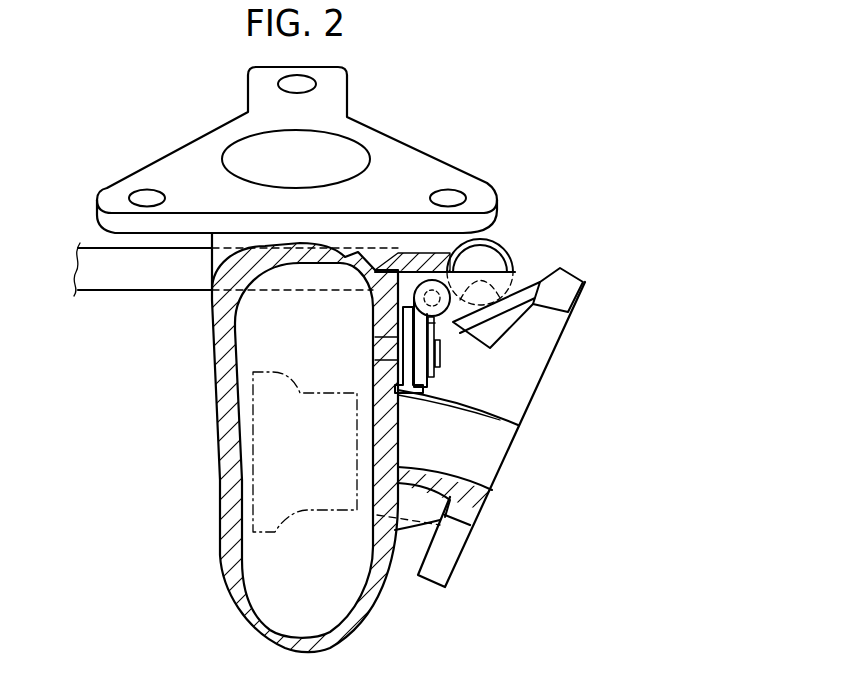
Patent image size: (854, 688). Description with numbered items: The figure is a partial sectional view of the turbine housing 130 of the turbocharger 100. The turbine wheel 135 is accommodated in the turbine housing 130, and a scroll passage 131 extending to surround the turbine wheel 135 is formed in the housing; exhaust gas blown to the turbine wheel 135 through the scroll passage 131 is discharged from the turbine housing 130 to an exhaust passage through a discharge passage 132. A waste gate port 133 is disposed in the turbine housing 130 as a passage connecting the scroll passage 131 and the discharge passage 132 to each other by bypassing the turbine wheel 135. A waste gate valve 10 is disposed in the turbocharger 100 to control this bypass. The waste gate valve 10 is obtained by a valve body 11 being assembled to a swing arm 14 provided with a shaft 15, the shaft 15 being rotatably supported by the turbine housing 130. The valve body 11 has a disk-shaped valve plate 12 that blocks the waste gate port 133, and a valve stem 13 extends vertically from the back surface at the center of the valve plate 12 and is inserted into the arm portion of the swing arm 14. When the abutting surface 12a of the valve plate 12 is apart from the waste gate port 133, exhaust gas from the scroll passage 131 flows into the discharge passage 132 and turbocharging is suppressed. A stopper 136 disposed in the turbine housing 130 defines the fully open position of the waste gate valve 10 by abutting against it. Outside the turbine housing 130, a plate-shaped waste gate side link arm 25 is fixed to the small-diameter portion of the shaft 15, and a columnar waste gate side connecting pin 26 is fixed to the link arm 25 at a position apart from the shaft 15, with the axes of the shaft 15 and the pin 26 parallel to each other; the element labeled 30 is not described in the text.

The turbocharger 100 is at (571, 182).
The waste gate valve 10 is at (549, 423).
The valve body 11 is at (476, 370).
The valve plate 12 is at (420, 395).
The abutting surface 12a is at (403, 378).
The valve stem 13 is at (428, 362).
The swing arm 14 is at (445, 323).
The shaft 15 is at (403, 317).
The waste gate side link arm 25 is at (495, 250).
The waste gate side connecting pin 26 is at (505, 258).
The pipe 30 is at (133, 291).
The turbine housing 130 is at (223, 587).
The scroll passage 131 is at (358, 160).
The discharge passage 132 is at (483, 478).
The waste gate port 133 is at (380, 355).
The turbine wheel 135 is at (316, 512).
The stopper 136 is at (520, 322).